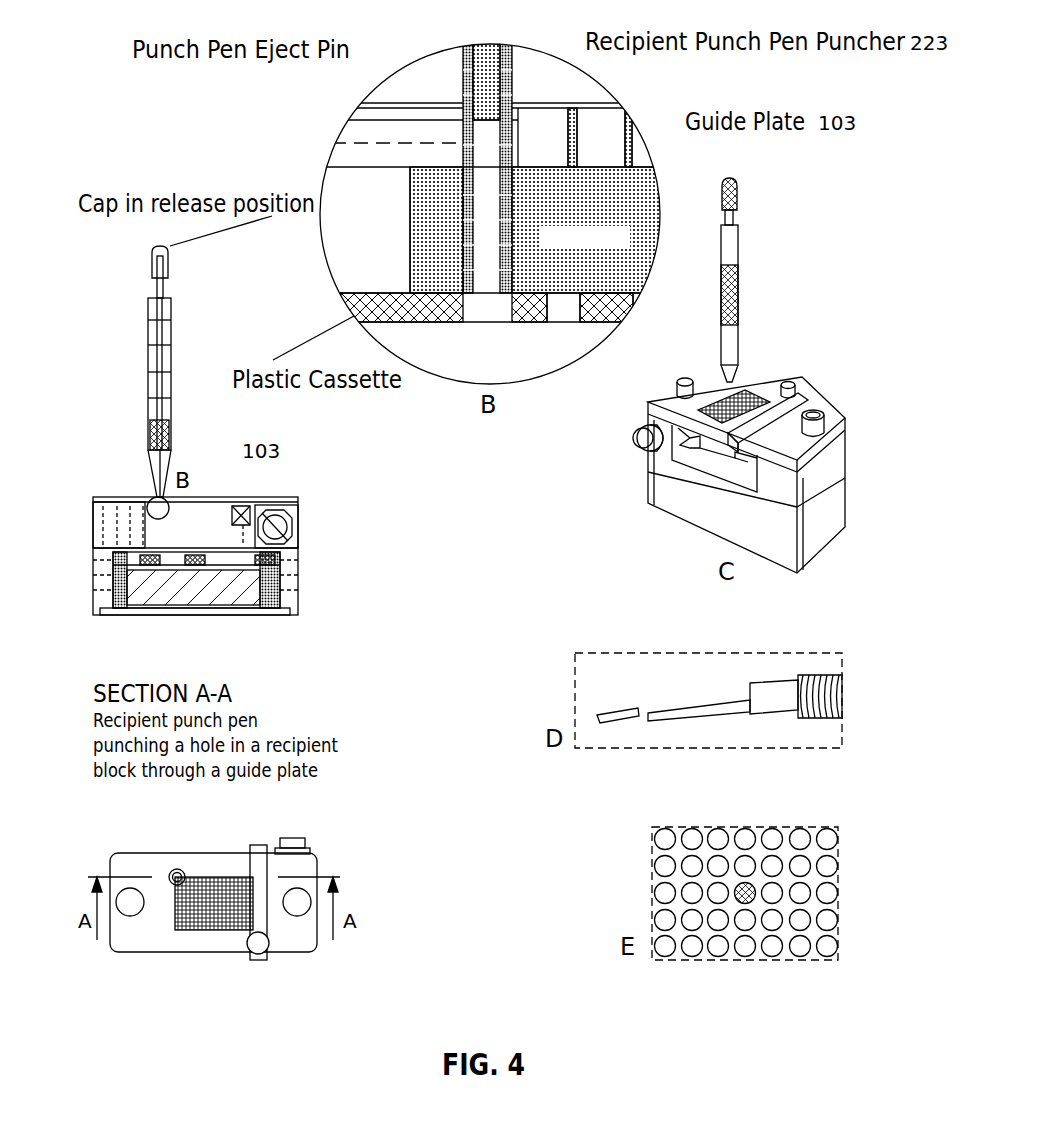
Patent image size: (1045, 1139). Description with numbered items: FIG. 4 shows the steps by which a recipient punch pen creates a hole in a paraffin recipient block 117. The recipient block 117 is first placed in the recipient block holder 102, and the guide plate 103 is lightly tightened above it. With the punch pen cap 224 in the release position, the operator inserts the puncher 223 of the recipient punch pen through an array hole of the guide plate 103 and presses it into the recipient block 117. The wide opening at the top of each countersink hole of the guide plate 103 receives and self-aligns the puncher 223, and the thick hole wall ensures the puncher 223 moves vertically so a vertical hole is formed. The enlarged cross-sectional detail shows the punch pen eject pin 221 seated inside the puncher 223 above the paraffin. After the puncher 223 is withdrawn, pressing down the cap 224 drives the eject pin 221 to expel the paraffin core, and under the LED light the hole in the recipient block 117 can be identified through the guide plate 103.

The punch pen eject pin 221 is at (485, 90).
The puncher 223 is at (513, 77).
The guide plate 103 is at (680, 118).
The recipient block 117 is at (603, 273).
The punch pen cap 224 is at (160, 248).
The recipient block holder 102 is at (300, 517).